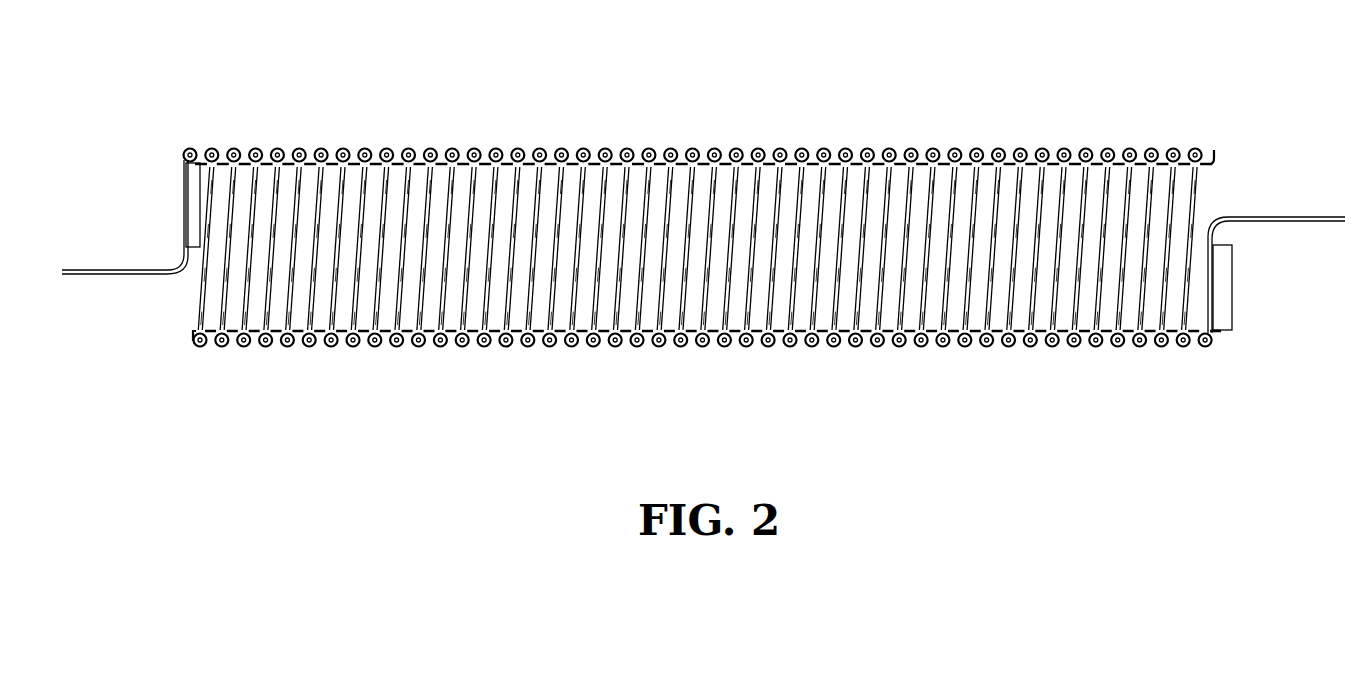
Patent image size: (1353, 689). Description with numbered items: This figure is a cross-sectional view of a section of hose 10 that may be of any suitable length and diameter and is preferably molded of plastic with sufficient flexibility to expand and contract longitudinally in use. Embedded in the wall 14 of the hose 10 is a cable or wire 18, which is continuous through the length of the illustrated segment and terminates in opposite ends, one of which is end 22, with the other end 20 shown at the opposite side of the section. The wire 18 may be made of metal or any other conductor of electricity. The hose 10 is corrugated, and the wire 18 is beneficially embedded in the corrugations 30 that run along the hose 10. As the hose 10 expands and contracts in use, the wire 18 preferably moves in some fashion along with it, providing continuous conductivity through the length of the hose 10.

The hose 10 is at (527, 414).
The wall 14 is at (970, 148).
The wire 18 is at (335, 227).
The first lead 20 is at (85, 278).
The end 22 is at (1292, 224).
The corrugations 30 is at (278, 148).